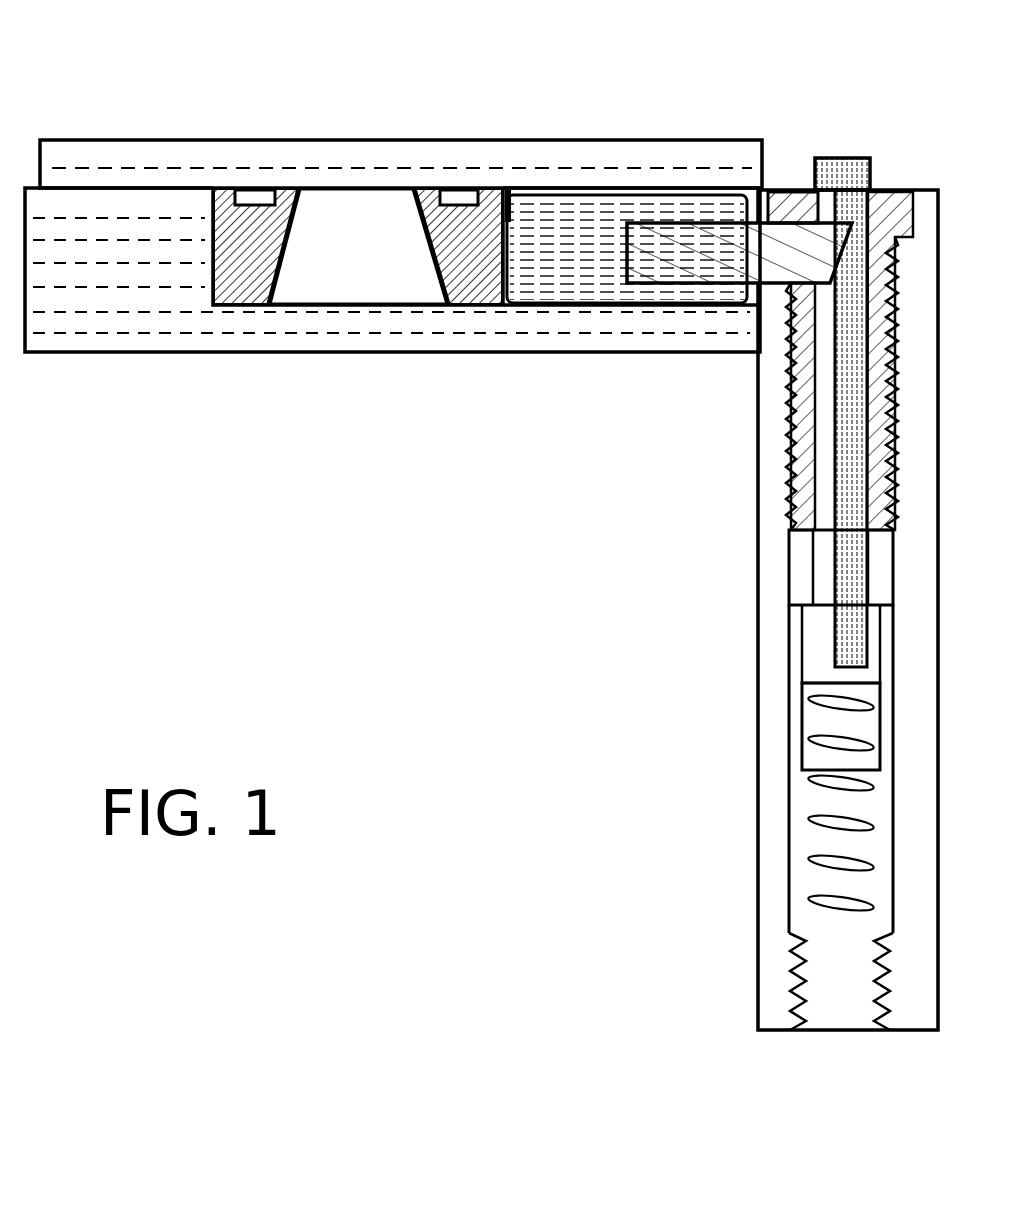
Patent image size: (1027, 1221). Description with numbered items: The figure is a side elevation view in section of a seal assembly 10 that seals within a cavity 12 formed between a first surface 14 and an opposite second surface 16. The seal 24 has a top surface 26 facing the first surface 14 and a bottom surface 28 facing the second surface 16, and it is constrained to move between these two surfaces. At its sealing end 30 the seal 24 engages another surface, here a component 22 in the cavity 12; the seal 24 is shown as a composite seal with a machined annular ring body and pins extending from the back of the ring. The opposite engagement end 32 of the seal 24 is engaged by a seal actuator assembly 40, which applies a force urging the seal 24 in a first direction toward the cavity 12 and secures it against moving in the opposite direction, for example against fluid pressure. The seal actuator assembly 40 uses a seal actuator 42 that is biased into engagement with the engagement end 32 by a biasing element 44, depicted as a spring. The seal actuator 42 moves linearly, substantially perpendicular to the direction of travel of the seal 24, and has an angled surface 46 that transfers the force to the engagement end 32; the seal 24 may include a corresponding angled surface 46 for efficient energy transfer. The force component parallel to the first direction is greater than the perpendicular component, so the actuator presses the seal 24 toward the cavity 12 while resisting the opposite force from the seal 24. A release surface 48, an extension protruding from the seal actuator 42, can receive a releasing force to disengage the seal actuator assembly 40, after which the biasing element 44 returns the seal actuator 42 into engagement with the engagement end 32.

The seal assembly 10 is at (722, 105).
The cavity 12 is at (353, 255).
The first surface 14 is at (562, 187).
The second surface 16 is at (522, 308).
The component 22 is at (475, 258).
The seal 24 is at (595, 240).
The top surface 26 is at (612, 195).
The bottom surface 28 is at (567, 306).
The sealing end 30 is at (509, 192).
The engagement end 32 is at (808, 255).
The seal actuator assembly 40 is at (868, 190).
The seal actuator 42 is at (847, 495).
The biasing element 44 is at (807, 822).
The angled surface 46 is at (840, 240).
The release surface 48 is at (858, 240).